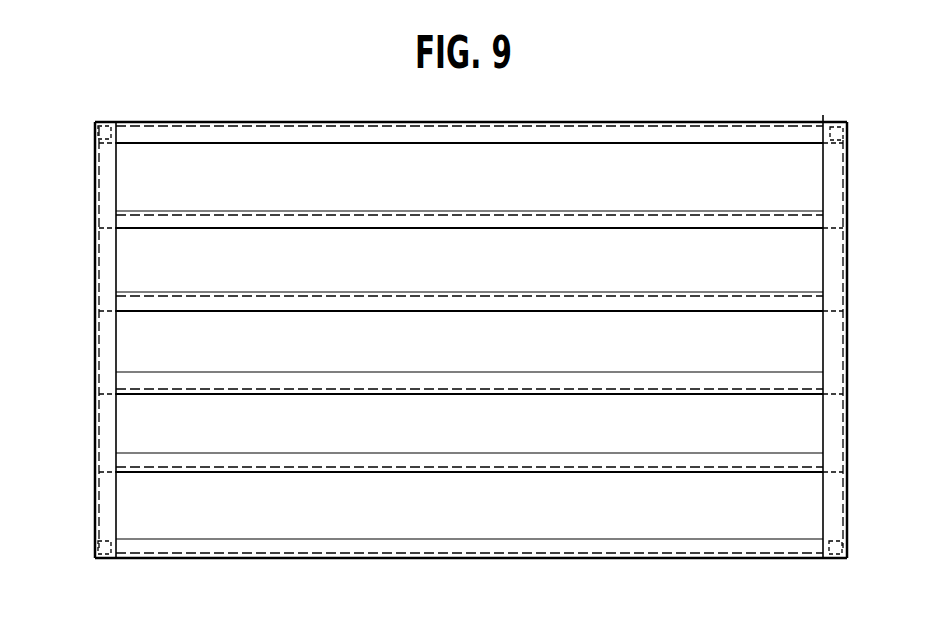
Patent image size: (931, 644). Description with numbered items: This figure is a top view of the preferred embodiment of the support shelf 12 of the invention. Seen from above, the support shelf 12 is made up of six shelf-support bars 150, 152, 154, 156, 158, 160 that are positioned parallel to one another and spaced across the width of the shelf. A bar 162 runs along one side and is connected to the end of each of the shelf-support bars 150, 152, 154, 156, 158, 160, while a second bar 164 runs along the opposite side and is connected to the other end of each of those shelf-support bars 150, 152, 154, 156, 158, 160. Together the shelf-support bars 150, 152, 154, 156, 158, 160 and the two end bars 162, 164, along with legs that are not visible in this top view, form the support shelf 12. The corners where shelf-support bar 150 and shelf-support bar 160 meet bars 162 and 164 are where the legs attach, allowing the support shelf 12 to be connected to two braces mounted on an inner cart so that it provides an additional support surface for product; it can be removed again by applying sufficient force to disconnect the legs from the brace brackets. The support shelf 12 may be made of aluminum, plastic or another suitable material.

The support shelf 12 is at (862, 458).
The shelf-support bar 150 is at (246, 143).
The shelf-support bar 152 is at (247, 228).
The shelf-support bar 154 is at (247, 312).
The shelf-support bar 156 is at (245, 394).
The shelf-support bar 158 is at (245, 472).
The shelf-support bar 160 is at (245, 558).
The bar 162 is at (95, 425).
The bar 164 is at (822, 419).